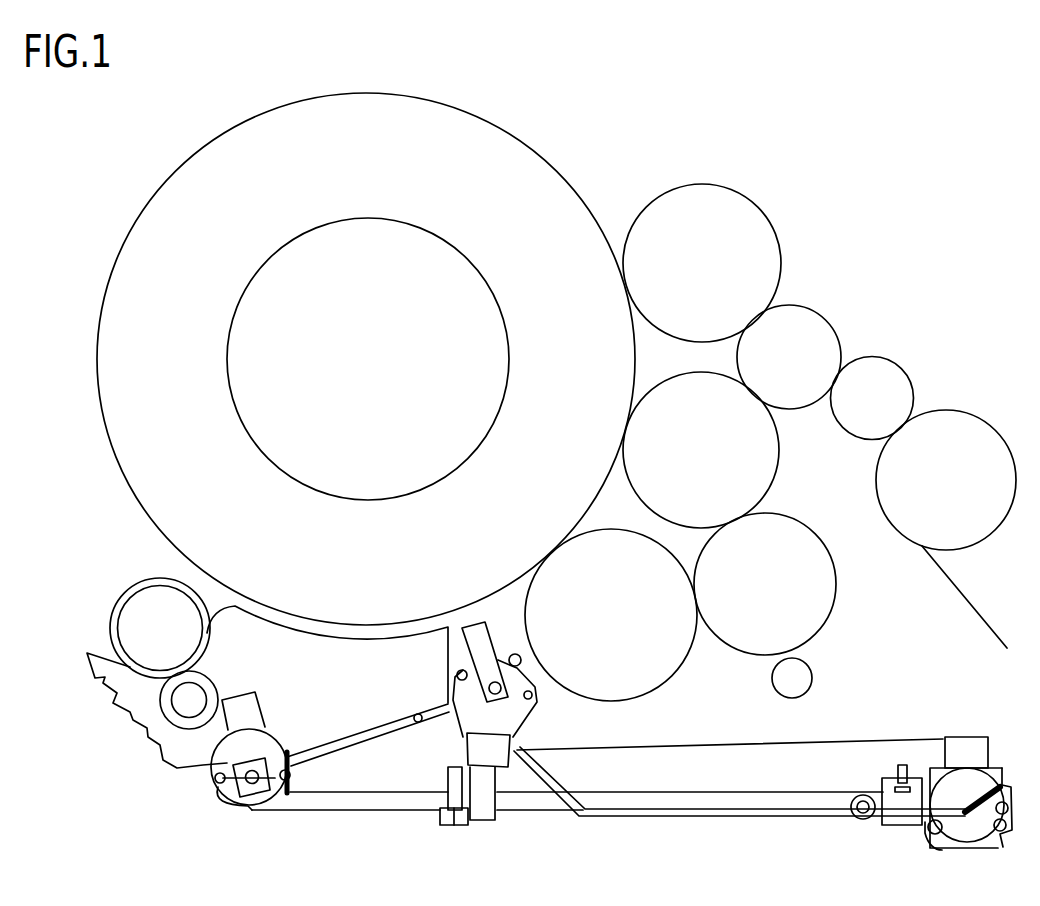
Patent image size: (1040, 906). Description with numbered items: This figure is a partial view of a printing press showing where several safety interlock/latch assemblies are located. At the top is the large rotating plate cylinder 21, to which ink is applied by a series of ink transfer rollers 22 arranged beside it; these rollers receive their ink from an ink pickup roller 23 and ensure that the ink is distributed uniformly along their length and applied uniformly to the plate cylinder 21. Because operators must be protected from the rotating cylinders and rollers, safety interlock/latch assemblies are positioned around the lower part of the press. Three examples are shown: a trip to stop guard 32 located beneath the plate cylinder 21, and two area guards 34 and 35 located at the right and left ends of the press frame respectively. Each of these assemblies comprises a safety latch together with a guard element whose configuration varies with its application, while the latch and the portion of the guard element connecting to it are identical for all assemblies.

The plate cylinder 21 is at (112, 443).
The ink transfer rollers 22 is at (780, 484).
The ink pickup roller 23 is at (912, 548).
The trip to stop guard 32 is at (663, 707).
The area guard 34 is at (763, 778).
The area guard 35 is at (268, 694).